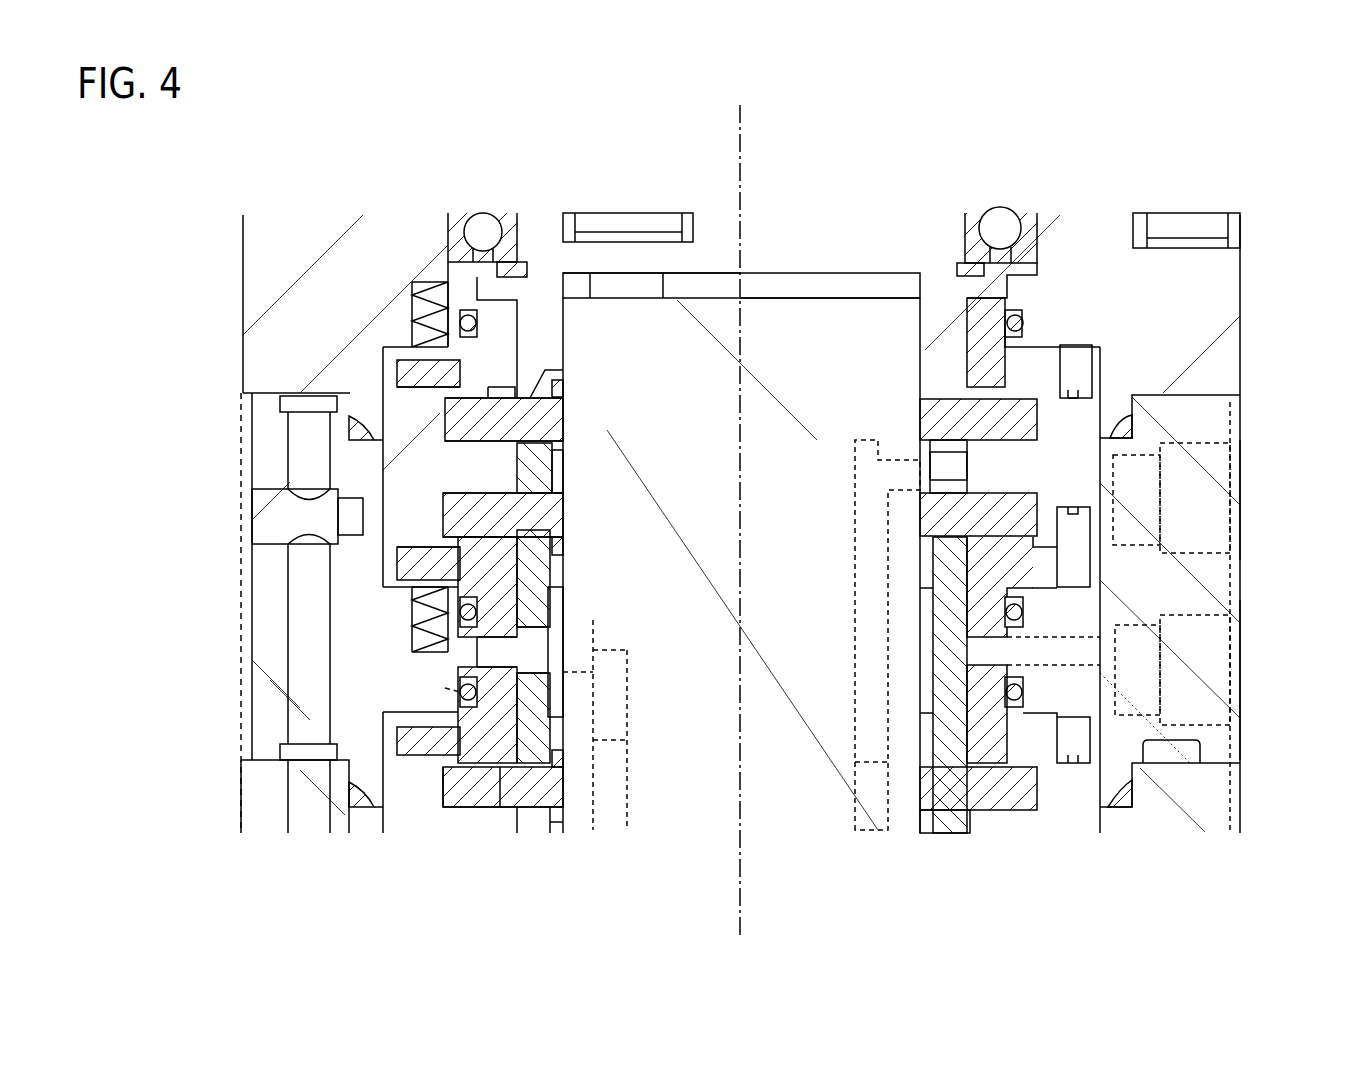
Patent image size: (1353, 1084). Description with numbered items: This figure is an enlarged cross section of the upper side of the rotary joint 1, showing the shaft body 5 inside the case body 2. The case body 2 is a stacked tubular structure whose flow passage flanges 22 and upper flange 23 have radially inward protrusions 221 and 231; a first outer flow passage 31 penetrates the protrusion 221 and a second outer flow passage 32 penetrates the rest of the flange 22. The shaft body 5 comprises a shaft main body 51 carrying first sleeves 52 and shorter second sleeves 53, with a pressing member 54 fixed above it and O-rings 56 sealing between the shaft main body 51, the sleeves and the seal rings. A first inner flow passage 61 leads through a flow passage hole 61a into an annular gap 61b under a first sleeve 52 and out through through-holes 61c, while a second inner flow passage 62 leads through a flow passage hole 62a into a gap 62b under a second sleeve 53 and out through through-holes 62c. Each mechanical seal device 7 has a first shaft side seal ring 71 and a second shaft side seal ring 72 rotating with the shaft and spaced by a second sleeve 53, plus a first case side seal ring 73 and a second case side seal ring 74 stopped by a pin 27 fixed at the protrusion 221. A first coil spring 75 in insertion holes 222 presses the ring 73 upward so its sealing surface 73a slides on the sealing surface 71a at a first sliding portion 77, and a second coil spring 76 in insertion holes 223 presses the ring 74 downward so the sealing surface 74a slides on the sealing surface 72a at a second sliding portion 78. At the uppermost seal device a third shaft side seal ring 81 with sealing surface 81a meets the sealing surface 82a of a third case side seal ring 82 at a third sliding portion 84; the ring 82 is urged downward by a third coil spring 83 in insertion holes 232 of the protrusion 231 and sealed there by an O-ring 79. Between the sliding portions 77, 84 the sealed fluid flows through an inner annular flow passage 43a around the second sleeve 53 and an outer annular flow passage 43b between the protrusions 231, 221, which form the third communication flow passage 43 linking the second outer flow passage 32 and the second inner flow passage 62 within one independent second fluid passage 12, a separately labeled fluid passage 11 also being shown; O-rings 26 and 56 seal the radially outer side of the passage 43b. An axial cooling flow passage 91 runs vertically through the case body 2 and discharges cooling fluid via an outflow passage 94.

The joint 1 is at (215, 200).
The case body 2 is at (240, 278).
The shaft body 5 is at (790, 850).
The mechanical seal device 7 is at (410, 795).
The stator 11 is at (1240, 679).
The second fluid passage 12 is at (1240, 531).
The flow passage flange 22 is at (1215, 600).
The upper flange 23 is at (1215, 278).
The O-ring 26 is at (1132, 430).
The pin 27 is at (1077, 377).
The first outer flow passage 31 is at (1170, 632).
The second outer flow passage 32 is at (1170, 465).
The third communication flow passage 43 is at (1000, 440).
The inner annular flow passage 43a is at (960, 520).
The outer annular flow passage 43b is at (1067, 473).
The shaft main body 51 is at (868, 300).
The first sleeve 52 is at (563, 595).
The second sleeve 53 is at (528, 468).
The pressing member 54 is at (800, 232).
The O-ring 56 is at (563, 373).
The first inner flow passage 61 is at (627, 700).
The flow passage hole 61a is at (627, 737).
The annular gap 61b is at (930, 657).
The through-hole 61c is at (563, 650).
The second inner flow passage 62 is at (850, 490).
The flow passage hole 62a is at (855, 762).
The annular gap 62b is at (560, 470).
The through-hole 62c is at (945, 462).
The first shaft side seal ring 71 is at (470, 508).
The sealing surface 71a is at (563, 545).
The second shaft side seal ring 72 is at (540, 810).
The sealing surface 72a is at (502, 810).
The first case side seal ring 73 is at (410, 565).
The sealing surface 73a is at (563, 517).
The second case side seal ring 74 is at (433, 760).
The sealing surface 74a is at (462, 810).
The first coil spring 75 is at (430, 612).
The second coil spring 76 is at (450, 685).
The first sliding portion 77 is at (688, 503).
The second sliding portion 78 is at (548, 883).
The O-ring 79 is at (1025, 323).
The third shaft side seal ring 81 is at (465, 437).
The sealing surface 81a is at (563, 385).
The third case side seal ring 82 is at (415, 378).
The sealing surface 82a is at (563, 408).
The third coil spring 83 is at (425, 312).
The third sliding portion 84 is at (685, 365).
The axial cooling flow passage 91 is at (285, 800).
The outflow passage 94 is at (252, 505).
The protrusion 221 is at (1040, 690).
The insertion hole 222 is at (458, 612).
The insertion hole 223 is at (445, 688).
The protrusion 231 is at (1072, 292).
The insertion hole 232 is at (410, 330).